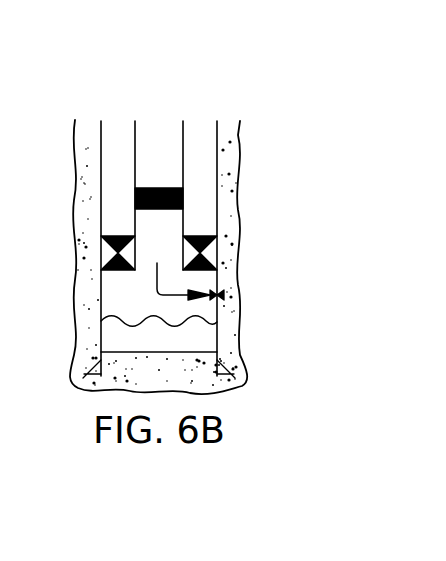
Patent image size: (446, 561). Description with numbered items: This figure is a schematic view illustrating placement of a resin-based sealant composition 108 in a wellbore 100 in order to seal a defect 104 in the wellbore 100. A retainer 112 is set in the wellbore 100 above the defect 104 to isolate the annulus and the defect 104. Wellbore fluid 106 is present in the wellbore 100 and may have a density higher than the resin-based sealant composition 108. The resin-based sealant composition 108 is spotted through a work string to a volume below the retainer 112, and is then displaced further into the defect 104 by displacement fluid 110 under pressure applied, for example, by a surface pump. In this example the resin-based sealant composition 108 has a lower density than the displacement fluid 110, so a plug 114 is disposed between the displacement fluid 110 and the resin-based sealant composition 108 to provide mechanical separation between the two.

The wellbore 100 is at (329, 43).
The defect 104 is at (224, 294).
The wellbore fluid 106 is at (187, 335).
The resin-based sealant composition 108 is at (112, 302).
The displacement fluid 110 is at (160, 145).
The retainer 112 is at (205, 248).
The plug 114 is at (183, 198).